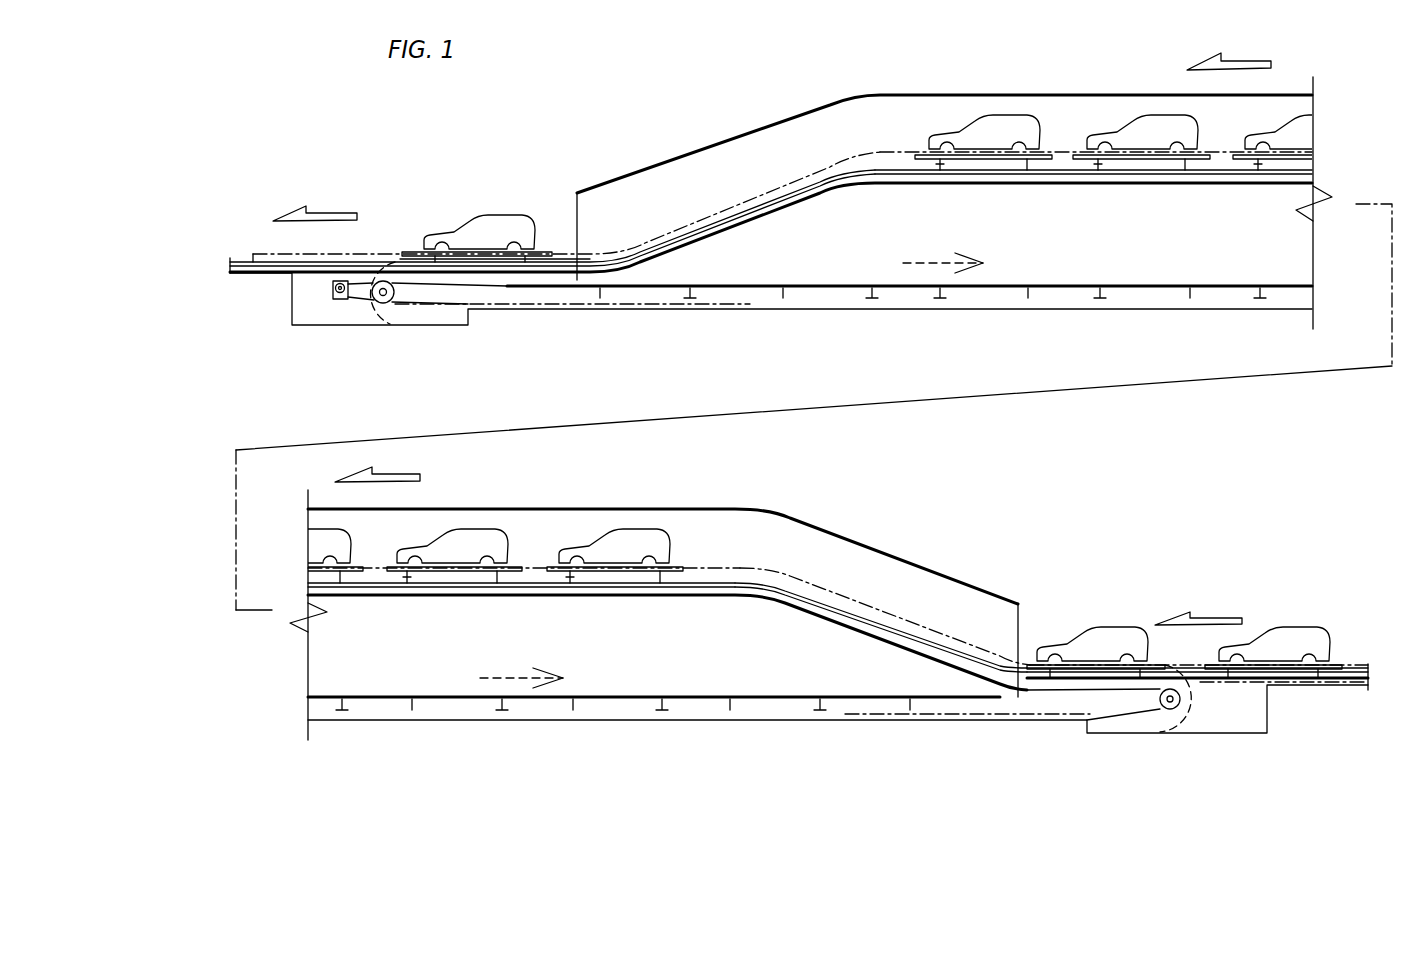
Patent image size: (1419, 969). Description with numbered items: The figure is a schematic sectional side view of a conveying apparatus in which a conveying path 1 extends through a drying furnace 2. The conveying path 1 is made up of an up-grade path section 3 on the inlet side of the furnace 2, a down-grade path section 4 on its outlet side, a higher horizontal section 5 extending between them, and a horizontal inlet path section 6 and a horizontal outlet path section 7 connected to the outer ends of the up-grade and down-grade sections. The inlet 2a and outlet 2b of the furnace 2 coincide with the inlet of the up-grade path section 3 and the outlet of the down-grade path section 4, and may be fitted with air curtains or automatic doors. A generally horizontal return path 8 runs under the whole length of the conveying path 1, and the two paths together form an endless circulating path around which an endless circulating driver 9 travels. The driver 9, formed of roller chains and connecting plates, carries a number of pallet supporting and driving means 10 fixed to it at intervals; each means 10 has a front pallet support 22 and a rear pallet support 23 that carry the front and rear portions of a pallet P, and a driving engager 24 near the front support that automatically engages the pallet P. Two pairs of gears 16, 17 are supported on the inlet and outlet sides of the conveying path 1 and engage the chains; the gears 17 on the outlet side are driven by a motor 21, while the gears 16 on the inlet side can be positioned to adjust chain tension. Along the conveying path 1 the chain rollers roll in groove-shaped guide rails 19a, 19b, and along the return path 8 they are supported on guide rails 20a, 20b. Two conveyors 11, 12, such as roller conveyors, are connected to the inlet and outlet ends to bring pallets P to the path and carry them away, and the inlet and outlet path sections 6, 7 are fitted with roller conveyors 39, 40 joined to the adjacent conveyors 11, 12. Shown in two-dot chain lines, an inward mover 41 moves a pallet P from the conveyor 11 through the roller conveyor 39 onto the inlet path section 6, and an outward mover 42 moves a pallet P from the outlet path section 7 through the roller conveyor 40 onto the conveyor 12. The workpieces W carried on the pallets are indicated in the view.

The conveying path 1 is at (857, 147).
The drying furnace 2 is at (1070, 95).
The inlet 2a is at (1020, 620).
The outlet 2b is at (577, 222).
The up-grade path section 3 is at (897, 613).
The down-grade path section 4 is at (748, 185).
The higher horizontal section 5 is at (1060, 150).
The horizontal inlet path section 6 is at (1097, 655).
The horizontal outlet path section 7 is at (485, 245).
The return path 8 is at (1063, 283).
The endless circulating driver 9 is at (818, 283).
The pallet supporting and driving means 10 is at (940, 166).
The conveyor 11 is at (1355, 683).
The conveyor 12 is at (238, 262).
The gears 16 is at (1175, 705).
The gears 17 is at (383, 303).
The guide rail 19a is at (771, 484).
The guide rail 19b is at (507, 287).
The guide rail 20a is at (776, 549).
The guide rail 20b is at (895, 288).
The motor 21 is at (336, 297).
The front pallet support 22 is at (829, 418).
The driving engager 24 is at (960, 183).
The rear pallet support 23 is at (1033, 167).
The roller conveyor 39 is at (1190, 672).
The roller conveyor 40 is at (356, 262).
The inward mover 41 is at (1190, 660).
The outward mover 42 is at (322, 248).
The vehicle body (workpiece) W is at (987, 123).
The pallet P is at (468, 252).